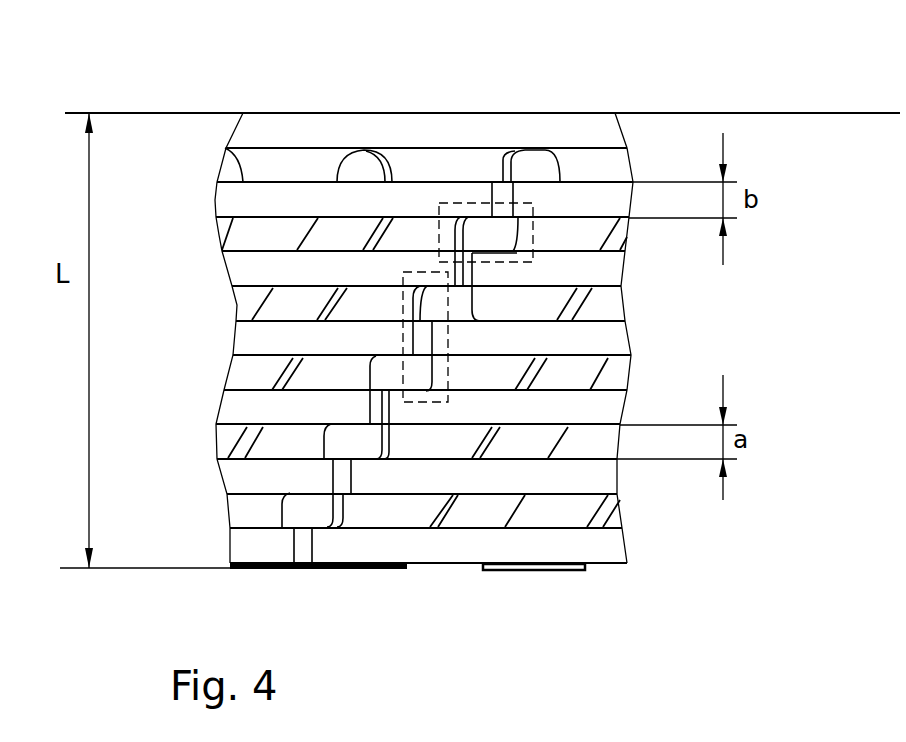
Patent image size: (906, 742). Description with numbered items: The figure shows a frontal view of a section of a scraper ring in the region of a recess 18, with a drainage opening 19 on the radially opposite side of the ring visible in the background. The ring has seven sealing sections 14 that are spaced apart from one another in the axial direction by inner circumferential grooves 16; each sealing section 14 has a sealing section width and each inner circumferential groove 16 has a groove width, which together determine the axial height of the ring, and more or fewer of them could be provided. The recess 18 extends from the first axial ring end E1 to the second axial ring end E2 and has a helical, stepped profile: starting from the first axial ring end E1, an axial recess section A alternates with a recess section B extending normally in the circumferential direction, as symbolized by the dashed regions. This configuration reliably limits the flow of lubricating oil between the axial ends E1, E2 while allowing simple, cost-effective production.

The sealing sections 14 is at (264, 269).
The inner circumferential grooves 16 is at (570, 373).
The recess 18 is at (516, 165).
The drainage opening 19 is at (363, 172).
The axial recess section A is at (450, 372).
The recess section B is at (478, 203).
The first axial ring end E1 is at (553, 573).
The second axial ring end E2 is at (485, 115).